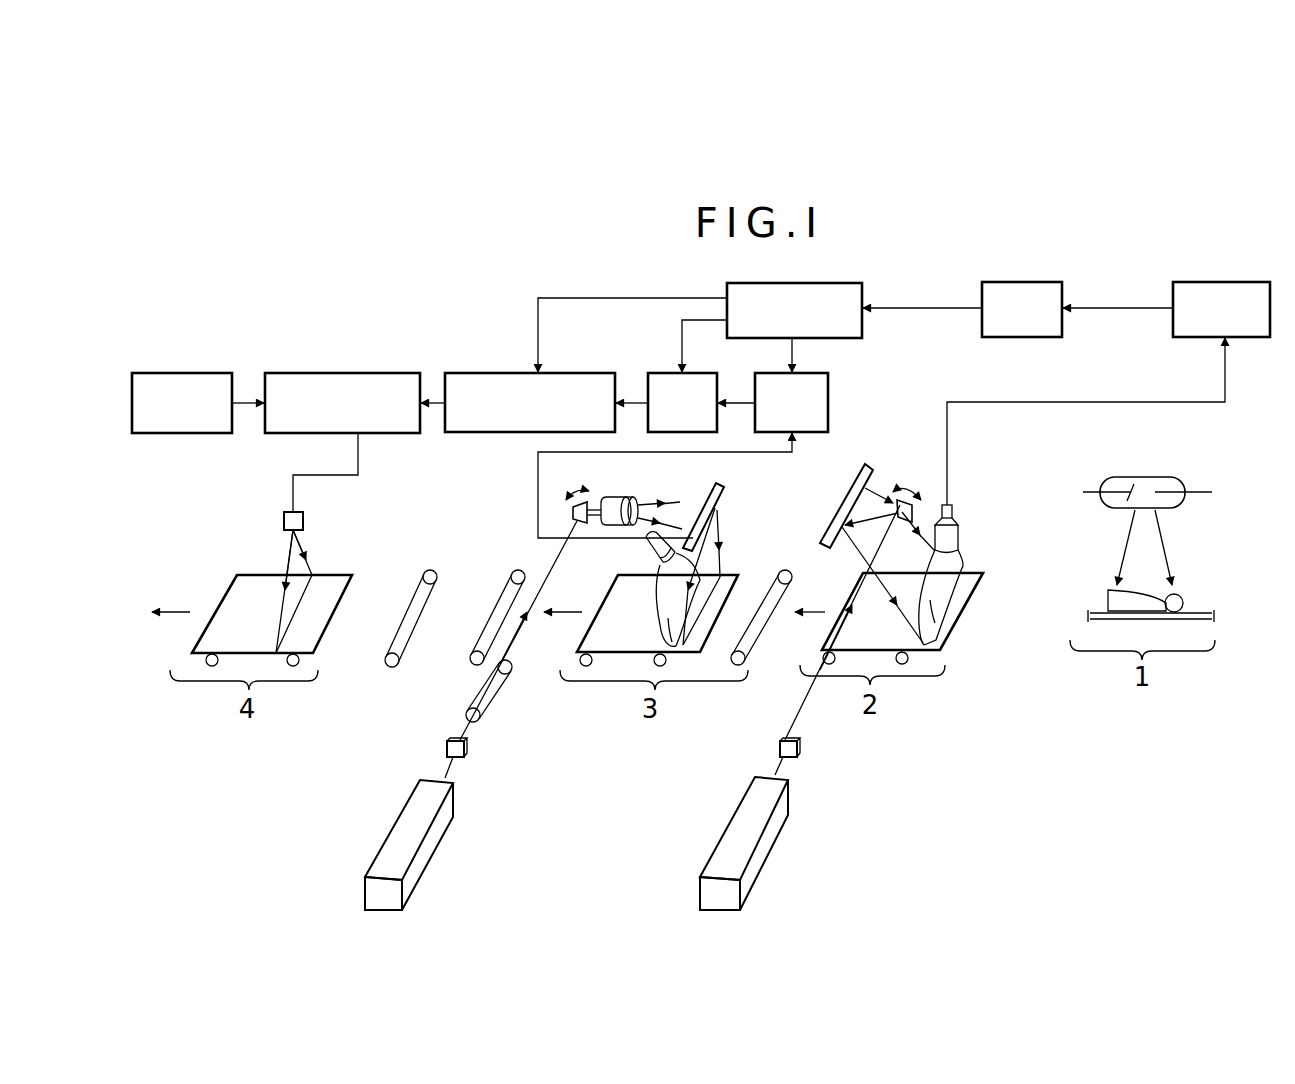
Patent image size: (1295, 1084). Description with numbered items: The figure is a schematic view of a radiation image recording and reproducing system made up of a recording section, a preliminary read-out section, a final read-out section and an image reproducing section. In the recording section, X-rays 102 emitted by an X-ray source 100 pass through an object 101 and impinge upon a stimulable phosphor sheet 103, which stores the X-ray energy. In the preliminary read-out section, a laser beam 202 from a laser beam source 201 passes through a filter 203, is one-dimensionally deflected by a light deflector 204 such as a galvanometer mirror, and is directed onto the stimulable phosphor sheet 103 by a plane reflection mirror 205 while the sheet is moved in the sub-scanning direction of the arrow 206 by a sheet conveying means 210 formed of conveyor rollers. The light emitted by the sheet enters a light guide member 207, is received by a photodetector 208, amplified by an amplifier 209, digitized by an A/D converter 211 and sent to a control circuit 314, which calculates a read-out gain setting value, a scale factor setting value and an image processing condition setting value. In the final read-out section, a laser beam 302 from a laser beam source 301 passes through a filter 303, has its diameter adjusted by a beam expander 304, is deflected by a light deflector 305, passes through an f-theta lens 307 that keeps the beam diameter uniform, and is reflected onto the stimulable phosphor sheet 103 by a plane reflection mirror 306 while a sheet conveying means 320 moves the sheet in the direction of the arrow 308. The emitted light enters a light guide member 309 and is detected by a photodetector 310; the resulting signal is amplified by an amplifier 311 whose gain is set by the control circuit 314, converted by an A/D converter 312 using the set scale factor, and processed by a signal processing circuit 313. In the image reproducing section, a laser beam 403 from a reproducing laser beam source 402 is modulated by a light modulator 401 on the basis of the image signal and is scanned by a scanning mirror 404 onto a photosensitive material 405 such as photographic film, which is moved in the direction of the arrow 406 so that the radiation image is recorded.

The X-ray source 100 is at (1176, 477).
The object 101 is at (1110, 595).
The X-rays 102 is at (1163, 545).
The stimulable phosphor sheet 103 is at (725, 590).
The laser beam source 201 is at (775, 828).
The laser beam 202 is at (785, 768).
The filter 203 is at (799, 746).
The light deflector 204 is at (926, 500).
The plane reflection mirror 205 is at (846, 467).
The arrow 206 is at (822, 611).
The light guide member 207 is at (948, 570).
The photodetector 208 is at (958, 528).
The amplifier 209 is at (1220, 282).
The sheet conveying means 210 is at (906, 662).
The A/D converter 211 is at (1024, 282).
The laser beam source 301 is at (440, 828).
The laser beam 302 is at (452, 770).
The filter 303 is at (466, 746).
The beam expander 304 is at (496, 690).
The light deflector 305 is at (598, 502).
The plane reflection mirror 306 is at (725, 492).
The f-theta lens 307 is at (636, 505).
The arrow 308 is at (576, 611).
The light guide member 309 is at (700, 575).
The photodetector 310 is at (645, 556).
The amplifier 311 is at (828, 385).
The A/D converter 312 is at (655, 372).
The signal processing circuit 313 is at (478, 372).
The control circuit 314 is at (830, 283).
The sheet conveying means 320 is at (666, 662).
The light modulator 401 is at (360, 372).
The reproducing laser beam source 402 is at (210, 372).
The laser beam 403 is at (247, 405).
The scanning mirror 404 is at (305, 518).
The photosensitive material 405 is at (253, 586).
The arrow 406 is at (180, 611).